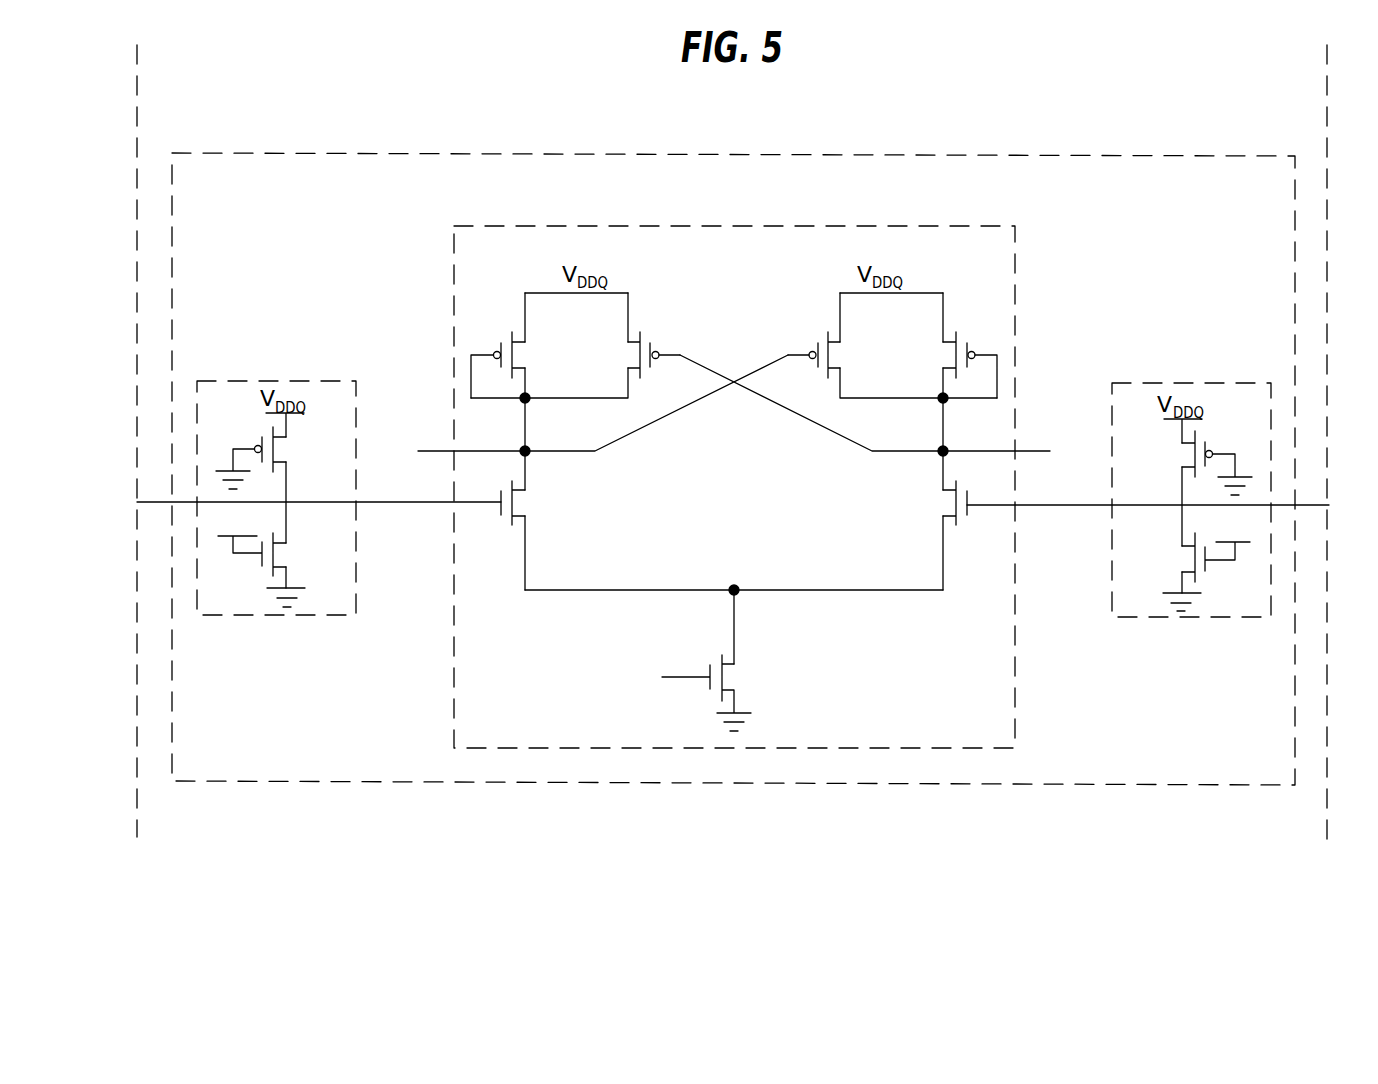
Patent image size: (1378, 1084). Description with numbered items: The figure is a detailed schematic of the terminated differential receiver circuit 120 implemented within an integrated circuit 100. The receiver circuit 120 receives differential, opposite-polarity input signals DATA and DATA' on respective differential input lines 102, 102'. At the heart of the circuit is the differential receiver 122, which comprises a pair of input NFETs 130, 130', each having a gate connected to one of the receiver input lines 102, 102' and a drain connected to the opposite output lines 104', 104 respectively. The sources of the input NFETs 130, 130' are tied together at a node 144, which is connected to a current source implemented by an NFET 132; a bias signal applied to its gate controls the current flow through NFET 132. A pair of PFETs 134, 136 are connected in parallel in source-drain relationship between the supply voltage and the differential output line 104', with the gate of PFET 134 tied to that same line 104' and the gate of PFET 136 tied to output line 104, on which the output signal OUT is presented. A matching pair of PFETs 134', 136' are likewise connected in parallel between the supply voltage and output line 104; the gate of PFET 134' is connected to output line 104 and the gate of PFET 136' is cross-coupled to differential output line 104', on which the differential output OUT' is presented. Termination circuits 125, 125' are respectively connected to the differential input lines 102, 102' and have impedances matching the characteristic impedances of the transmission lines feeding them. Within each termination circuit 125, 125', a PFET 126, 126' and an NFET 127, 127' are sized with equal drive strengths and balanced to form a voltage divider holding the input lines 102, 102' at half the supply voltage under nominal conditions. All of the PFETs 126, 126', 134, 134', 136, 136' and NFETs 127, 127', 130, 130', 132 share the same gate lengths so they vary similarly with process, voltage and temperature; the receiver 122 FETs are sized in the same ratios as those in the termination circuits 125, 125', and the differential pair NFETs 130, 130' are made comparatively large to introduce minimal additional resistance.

The integrated circuit 100 is at (198, 105).
The differential input line 102 is at (300, 518).
The differential input line 102' is at (1166, 523).
The output line 104 is at (997, 429).
The differential output line 104' is at (464, 426).
The terminating receiver circuit 120 is at (874, 156).
The differential receiver 122 is at (822, 229).
The termination circuit 125 is at (299, 496).
The termination circuit 125' is at (1169, 499).
The PFET 126 is at (276, 451).
The PFET 126' is at (1191, 457).
The NFET 127 is at (270, 557).
The NFET 127' is at (1194, 560).
The input NFET 130 is at (516, 525).
The input NFET 130' is at (954, 525).
The NFET 132 is at (722, 664).
The PFET 134 is at (515, 340).
The PFET 134' is at (955, 340).
The PFET 136 is at (640, 330).
The PFET 136' is at (832, 330).
The node 144 is at (734, 590).